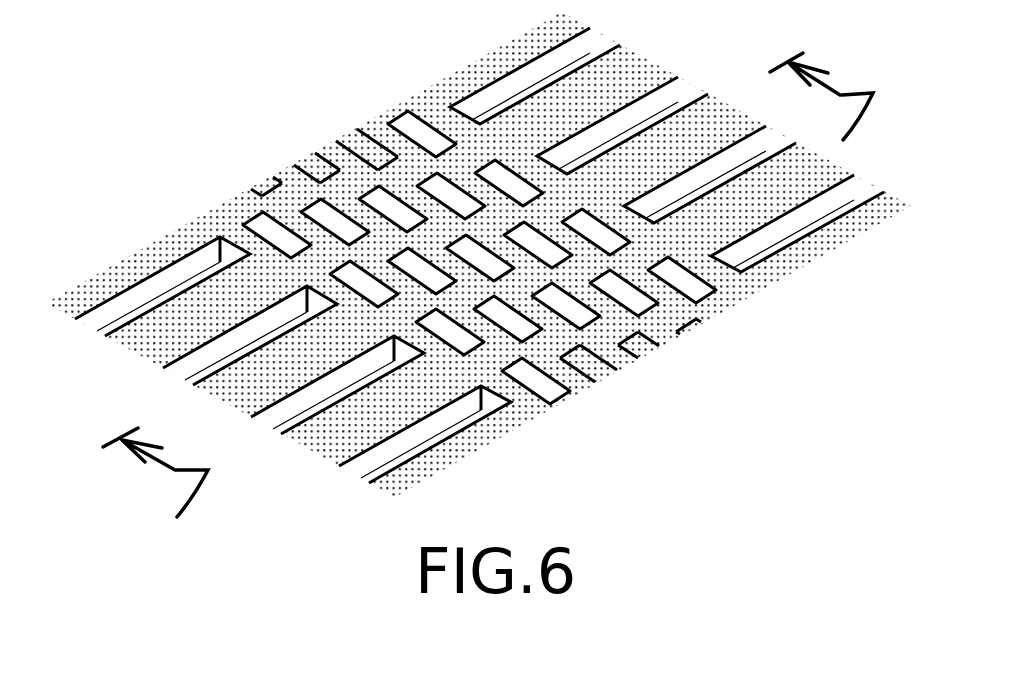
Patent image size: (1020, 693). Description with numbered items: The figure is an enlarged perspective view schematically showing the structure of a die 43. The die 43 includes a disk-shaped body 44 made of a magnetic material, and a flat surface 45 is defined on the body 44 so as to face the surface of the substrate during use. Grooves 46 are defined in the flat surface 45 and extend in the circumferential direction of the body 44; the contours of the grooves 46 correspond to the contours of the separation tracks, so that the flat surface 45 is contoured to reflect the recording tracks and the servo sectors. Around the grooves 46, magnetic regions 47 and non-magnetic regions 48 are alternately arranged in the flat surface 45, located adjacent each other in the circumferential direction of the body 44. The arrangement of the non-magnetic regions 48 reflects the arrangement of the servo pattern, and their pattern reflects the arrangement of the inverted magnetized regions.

The die 43 is at (170, 243).
The disk-shaped body 44 is at (695, 302).
The flat surface 45 is at (260, 247).
The grooves 46 is at (478, 104).
The magnetic regions 47 is at (340, 150).
The non-magnetic regions 48 is at (357, 147).